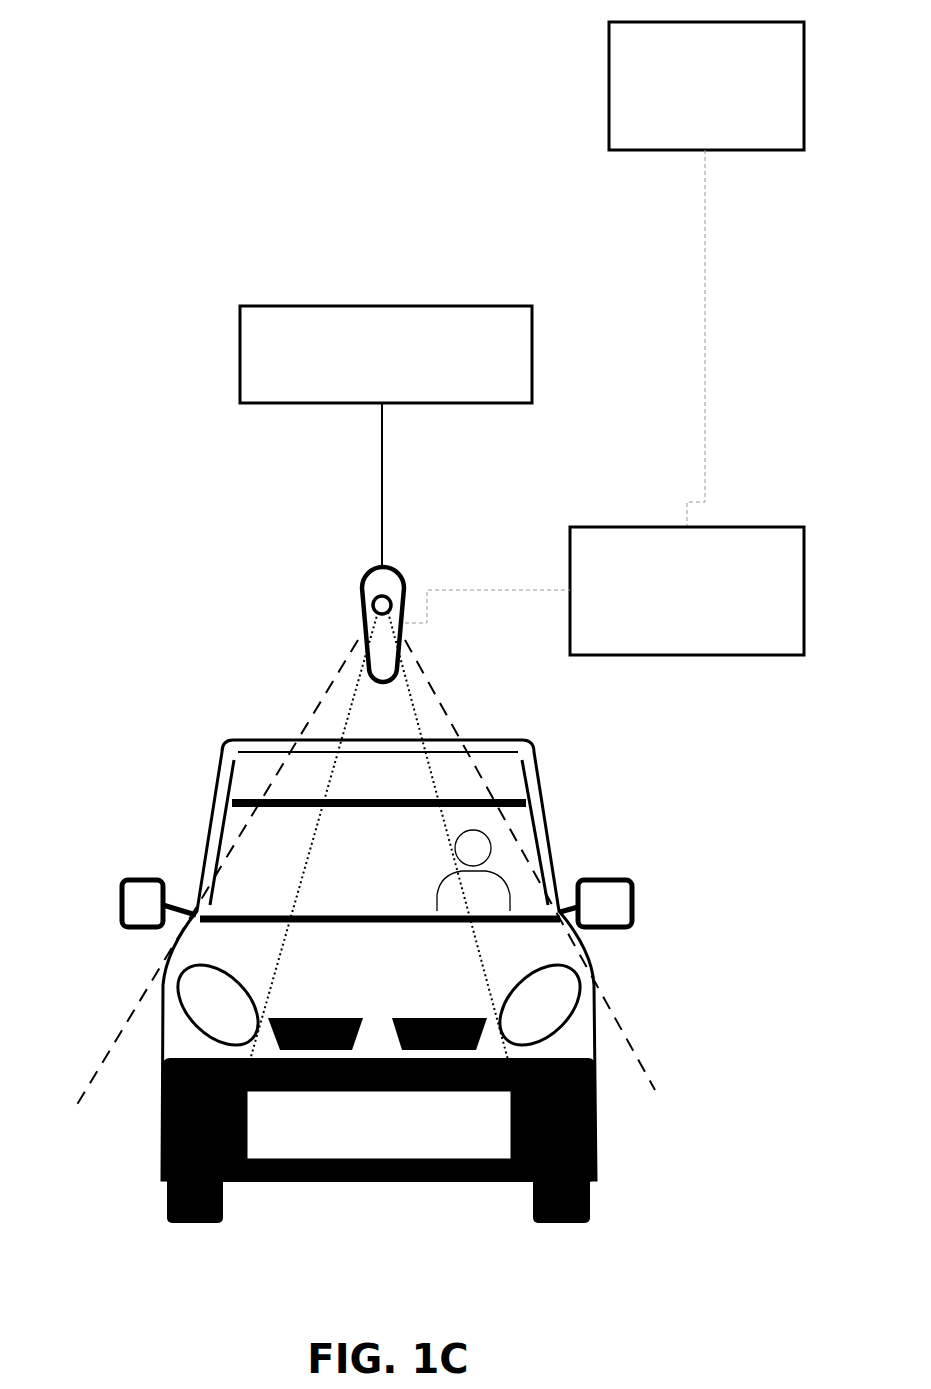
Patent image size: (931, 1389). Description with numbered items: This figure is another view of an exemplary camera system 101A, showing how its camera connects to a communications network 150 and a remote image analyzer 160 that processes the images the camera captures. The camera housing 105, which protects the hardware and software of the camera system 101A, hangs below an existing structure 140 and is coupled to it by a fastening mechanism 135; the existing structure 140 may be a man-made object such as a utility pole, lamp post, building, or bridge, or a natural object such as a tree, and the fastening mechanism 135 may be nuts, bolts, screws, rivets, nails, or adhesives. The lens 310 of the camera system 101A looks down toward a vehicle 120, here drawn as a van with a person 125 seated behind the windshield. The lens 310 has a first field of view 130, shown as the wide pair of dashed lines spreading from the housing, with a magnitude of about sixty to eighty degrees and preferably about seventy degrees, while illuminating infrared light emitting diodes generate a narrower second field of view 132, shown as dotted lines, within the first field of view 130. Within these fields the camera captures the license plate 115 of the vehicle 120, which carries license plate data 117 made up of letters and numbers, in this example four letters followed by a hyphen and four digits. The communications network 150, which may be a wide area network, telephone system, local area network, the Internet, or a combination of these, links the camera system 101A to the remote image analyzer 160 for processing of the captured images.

The camera system 101A is at (160, 223).
The remote image analyzer 160 is at (706, 75).
The existing structure 140 is at (386, 341).
The communications network 150 is at (687, 579).
The fastening mechanism 135 is at (382, 489).
The camera housing 105 is at (367, 587).
The lens 310 is at (383, 597).
The first field of view 130 is at (310, 717).
The vehicle 120 is at (352, 1006).
The driver 125 is at (478, 843).
The second field of view 132 is at (275, 962).
The license plate data 117 is at (290, 1127).
The license plate 115 is at (400, 1148).